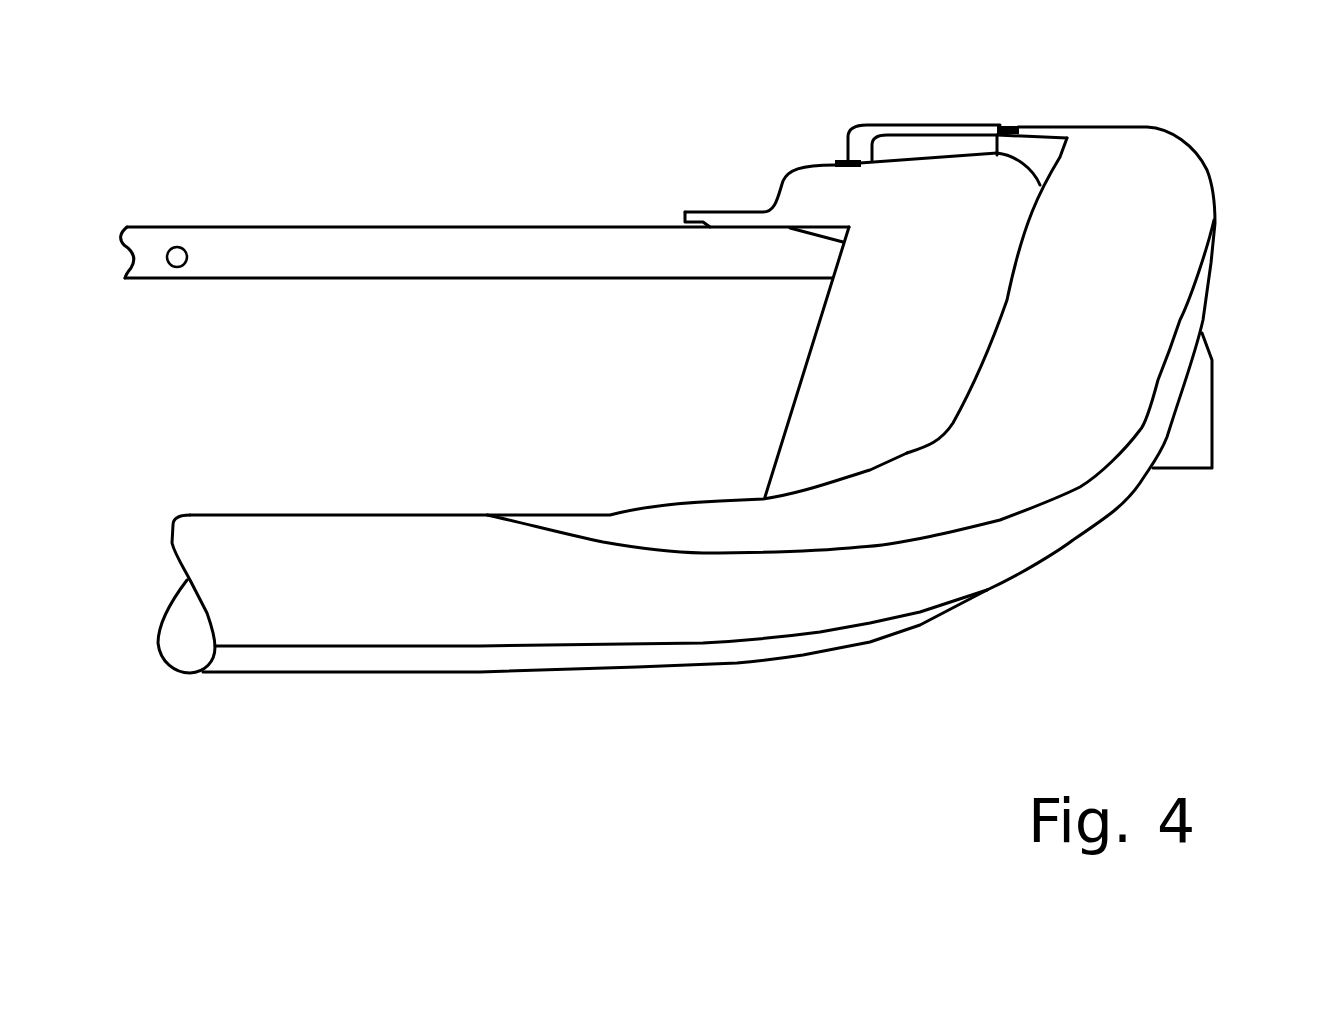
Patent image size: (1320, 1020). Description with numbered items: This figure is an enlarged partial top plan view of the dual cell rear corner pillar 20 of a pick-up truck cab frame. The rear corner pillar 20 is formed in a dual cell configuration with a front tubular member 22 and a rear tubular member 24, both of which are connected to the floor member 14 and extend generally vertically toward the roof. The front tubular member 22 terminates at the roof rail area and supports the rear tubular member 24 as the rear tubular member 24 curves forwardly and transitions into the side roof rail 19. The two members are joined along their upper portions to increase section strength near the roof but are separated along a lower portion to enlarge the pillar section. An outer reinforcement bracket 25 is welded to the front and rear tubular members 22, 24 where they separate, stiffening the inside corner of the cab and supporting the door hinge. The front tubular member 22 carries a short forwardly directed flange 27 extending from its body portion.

The floor member 14 is at (415, 227).
The side roof rail 19 is at (360, 623).
The rear corner pillar 20 is at (836, 89).
The front tubular member 22 is at (863, 361).
The rear tubular member 24 is at (1150, 180).
The outer reinforcement bracket 25 is at (932, 125).
The forwardly directed flange 27 is at (722, 212).